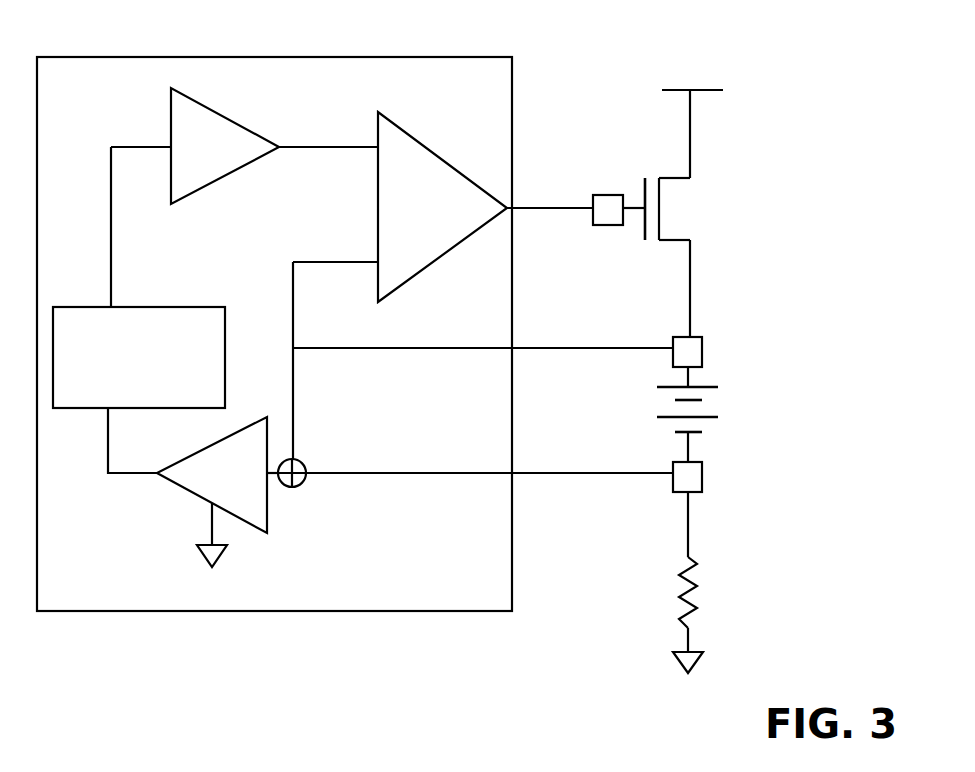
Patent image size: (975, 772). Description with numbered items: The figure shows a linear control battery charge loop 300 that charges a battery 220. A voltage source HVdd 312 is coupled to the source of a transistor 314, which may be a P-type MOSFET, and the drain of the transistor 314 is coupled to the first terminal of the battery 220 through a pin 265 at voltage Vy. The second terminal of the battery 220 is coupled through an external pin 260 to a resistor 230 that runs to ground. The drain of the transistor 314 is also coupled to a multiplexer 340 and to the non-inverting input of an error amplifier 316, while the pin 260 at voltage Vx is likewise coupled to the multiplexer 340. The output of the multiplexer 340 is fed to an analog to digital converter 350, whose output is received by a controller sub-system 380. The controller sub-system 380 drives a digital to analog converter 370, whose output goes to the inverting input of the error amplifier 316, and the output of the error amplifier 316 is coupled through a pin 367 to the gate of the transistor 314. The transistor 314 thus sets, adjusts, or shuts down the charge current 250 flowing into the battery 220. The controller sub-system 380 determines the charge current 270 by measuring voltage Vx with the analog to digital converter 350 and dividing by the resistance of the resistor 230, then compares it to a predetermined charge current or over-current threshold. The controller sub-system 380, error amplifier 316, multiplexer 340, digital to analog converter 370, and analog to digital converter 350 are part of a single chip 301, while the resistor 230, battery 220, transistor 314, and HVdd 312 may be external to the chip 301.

The loop 300 is at (774, 86).
The chip 301 is at (274, 334).
The voltage source HVdd 312 is at (697, 118).
The transistor 314 is at (645, 207).
The error amplifier 316 is at (473, 207).
The multiplexer 340 is at (475, 374).
The analog to digital converter 350 is at (217, 492).
The pin 367 is at (606, 220).
The digital to analog converter 370 is at (244, 146).
The controller sub-system 380 is at (139, 310).
The current 250 is at (708, 325).
The pin 265 is at (781, 354).
The battery 220 is at (672, 385).
The pin 260 is at (760, 463).
The resistor 230 is at (749, 582).
The current 270 is at (664, 622).